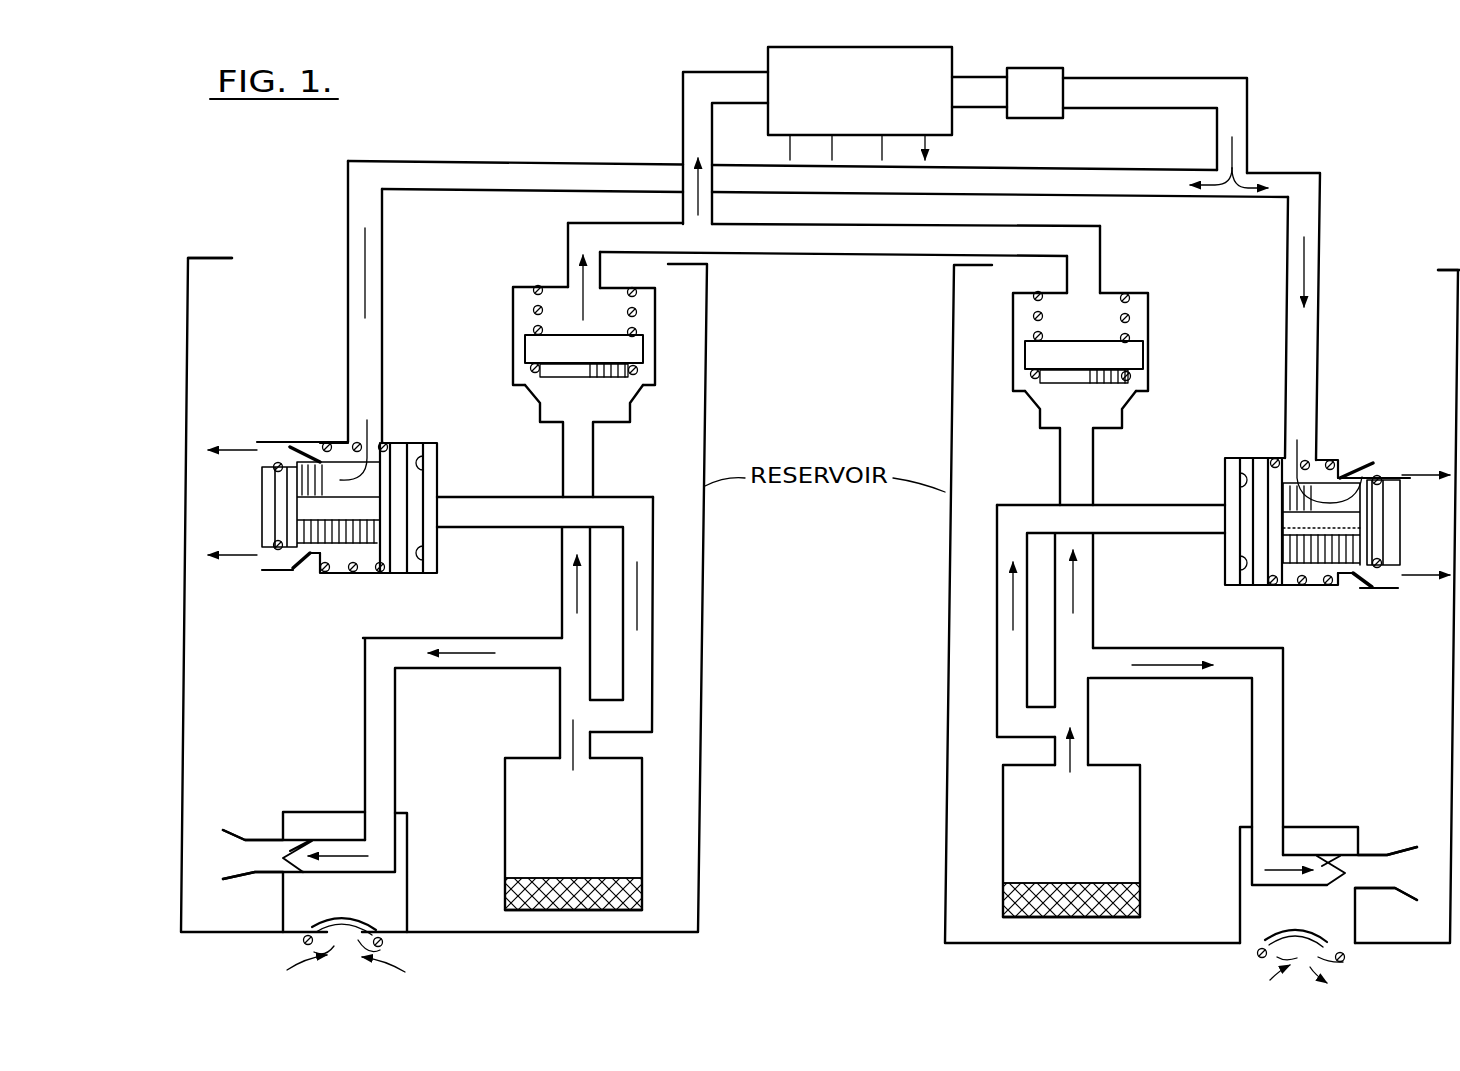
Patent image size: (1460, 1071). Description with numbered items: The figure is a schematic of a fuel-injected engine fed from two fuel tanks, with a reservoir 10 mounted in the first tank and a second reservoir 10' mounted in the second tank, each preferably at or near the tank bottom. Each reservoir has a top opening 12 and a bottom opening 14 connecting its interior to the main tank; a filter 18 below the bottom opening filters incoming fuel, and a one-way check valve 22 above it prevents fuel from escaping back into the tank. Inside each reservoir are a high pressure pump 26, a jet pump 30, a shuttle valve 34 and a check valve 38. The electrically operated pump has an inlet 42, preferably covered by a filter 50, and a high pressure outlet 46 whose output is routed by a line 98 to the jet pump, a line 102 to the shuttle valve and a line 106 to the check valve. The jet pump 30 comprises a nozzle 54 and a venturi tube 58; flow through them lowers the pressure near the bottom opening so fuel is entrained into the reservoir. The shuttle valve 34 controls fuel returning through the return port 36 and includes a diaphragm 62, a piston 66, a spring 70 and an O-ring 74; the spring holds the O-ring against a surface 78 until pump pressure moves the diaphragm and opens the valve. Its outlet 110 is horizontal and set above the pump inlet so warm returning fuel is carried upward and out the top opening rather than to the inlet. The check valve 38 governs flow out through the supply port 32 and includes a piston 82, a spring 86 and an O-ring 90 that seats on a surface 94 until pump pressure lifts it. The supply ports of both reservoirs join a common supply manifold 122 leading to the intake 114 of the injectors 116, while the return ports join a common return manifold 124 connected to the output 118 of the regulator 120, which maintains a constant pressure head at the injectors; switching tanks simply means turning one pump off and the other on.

The reservoir 10 is at (475, 614).
The reservoir 10' is at (1166, 620).
The top opening 12 is at (262, 255).
The bottom opening 14 is at (382, 945).
The filter 18 is at (303, 945).
The one-way check valve 22 is at (378, 923).
The high pressure pump 26 is at (487, 784).
The jet pump 30 is at (272, 803).
The supply port 32 is at (568, 241).
The shuttle valve 34 is at (820, 496).
The return port 36 is at (356, 328).
The check valve 38 is at (492, 312).
The inlet 42 is at (595, 880).
The high pressure outlet 46 is at (588, 760).
The filter 50 is at (565, 905).
The nozzle 54 is at (310, 842).
The venturi tube 58 is at (255, 875).
The diaphragm 62 is at (425, 567).
The piston 66 is at (362, 515).
The spring 70 is at (354, 575).
The O-ring 74 is at (285, 465).
The surface 78 is at (300, 572).
The piston 82 is at (645, 347).
The spring 86 is at (637, 311).
The O-ring 90 is at (640, 373).
The surface 94 is at (535, 397).
The line 98 is at (415, 662).
The line 102 is at (647, 575).
The line 106 is at (572, 541).
The outlet 110 is at (260, 565).
The intake 114 is at (707, 80).
The injectors 116 is at (878, 128).
The output 118 is at (1178, 88).
The regulator 120 is at (1020, 105).
The common supply manifold 122 is at (785, 242).
The common return manifold 124 is at (875, 183).